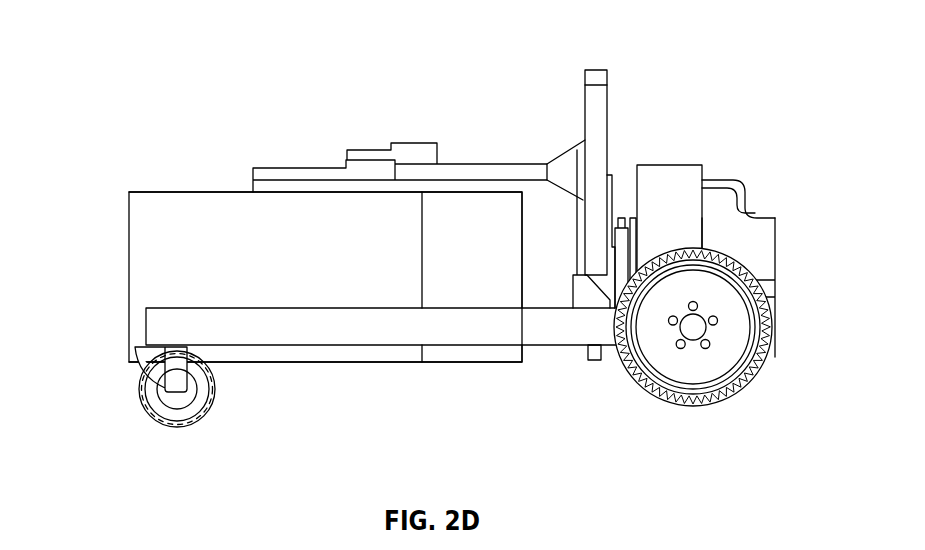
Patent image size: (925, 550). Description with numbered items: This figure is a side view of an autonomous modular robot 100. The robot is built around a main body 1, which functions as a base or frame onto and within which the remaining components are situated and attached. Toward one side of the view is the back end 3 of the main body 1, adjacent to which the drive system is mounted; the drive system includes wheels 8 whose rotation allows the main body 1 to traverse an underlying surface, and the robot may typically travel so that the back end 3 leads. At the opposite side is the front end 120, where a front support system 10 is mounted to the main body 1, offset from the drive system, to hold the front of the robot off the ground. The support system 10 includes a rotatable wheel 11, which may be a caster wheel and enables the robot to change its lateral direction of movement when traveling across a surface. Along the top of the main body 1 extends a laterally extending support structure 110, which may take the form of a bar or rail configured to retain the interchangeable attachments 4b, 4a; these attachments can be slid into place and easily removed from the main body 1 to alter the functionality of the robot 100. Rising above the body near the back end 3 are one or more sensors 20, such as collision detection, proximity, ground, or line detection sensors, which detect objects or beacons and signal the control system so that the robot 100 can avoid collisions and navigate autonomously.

The autonomous modular robot 100 is at (106, 44).
The front end 120 is at (106, 202).
The interchangeable attachment 4b is at (190, 191).
The interchangeable attachment 4a is at (488, 200).
The laterally extending support structure 110 is at (462, 163).
The sensors 20 is at (600, 69).
The back end 3 is at (790, 170).
The main body 1 is at (538, 347).
The front support system 10 is at (111, 392).
The rotatable wheel 11 is at (195, 425).
The wheels 8 is at (725, 400).